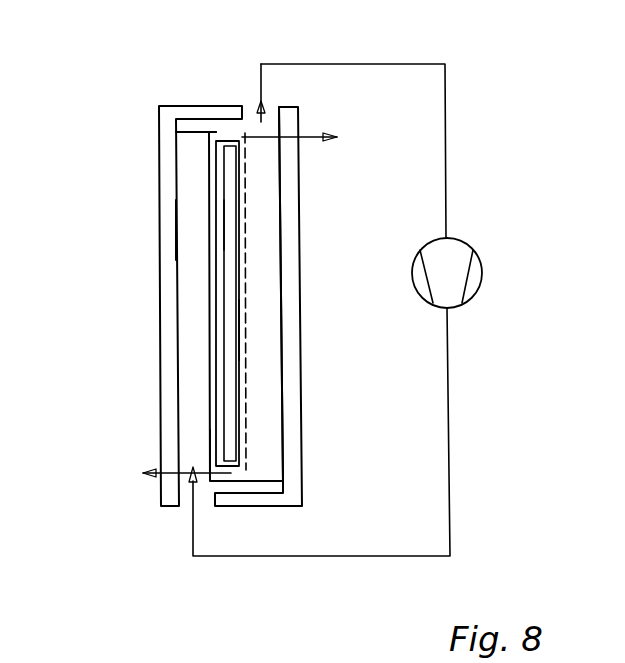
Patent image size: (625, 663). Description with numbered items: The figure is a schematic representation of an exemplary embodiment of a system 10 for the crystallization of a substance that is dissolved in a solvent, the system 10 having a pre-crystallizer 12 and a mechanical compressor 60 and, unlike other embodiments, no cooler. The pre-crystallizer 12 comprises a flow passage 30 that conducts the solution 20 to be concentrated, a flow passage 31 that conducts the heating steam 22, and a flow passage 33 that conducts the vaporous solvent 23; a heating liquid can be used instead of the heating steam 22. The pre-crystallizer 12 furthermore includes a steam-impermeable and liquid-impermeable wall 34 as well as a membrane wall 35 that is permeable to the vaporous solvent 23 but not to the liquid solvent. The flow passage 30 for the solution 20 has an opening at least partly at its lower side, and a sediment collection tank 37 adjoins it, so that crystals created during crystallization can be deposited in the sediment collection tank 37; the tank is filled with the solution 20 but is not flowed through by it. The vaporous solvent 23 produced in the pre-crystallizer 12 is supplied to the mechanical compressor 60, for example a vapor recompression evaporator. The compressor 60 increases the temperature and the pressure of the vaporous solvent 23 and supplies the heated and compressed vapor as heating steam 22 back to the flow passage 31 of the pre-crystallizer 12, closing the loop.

The system 10 is at (162, 43).
The pre-crystallizer 12 is at (156, 132).
The solution to be concentrated 20 is at (227, 227).
The heating steam 22 is at (290, 558).
The vaporous solvent 23 is at (288, 63).
The flow passage 30 is at (215, 137).
The flow passage 31 is at (190, 230).
The flow passage 33 is at (262, 285).
The steam-impermeable and liquid-impermeable wall 34 is at (212, 448).
The membrane wall 35 is at (245, 357).
The sediment collection tank 37 is at (237, 330).
The mechanical compressor 60 is at (487, 271).